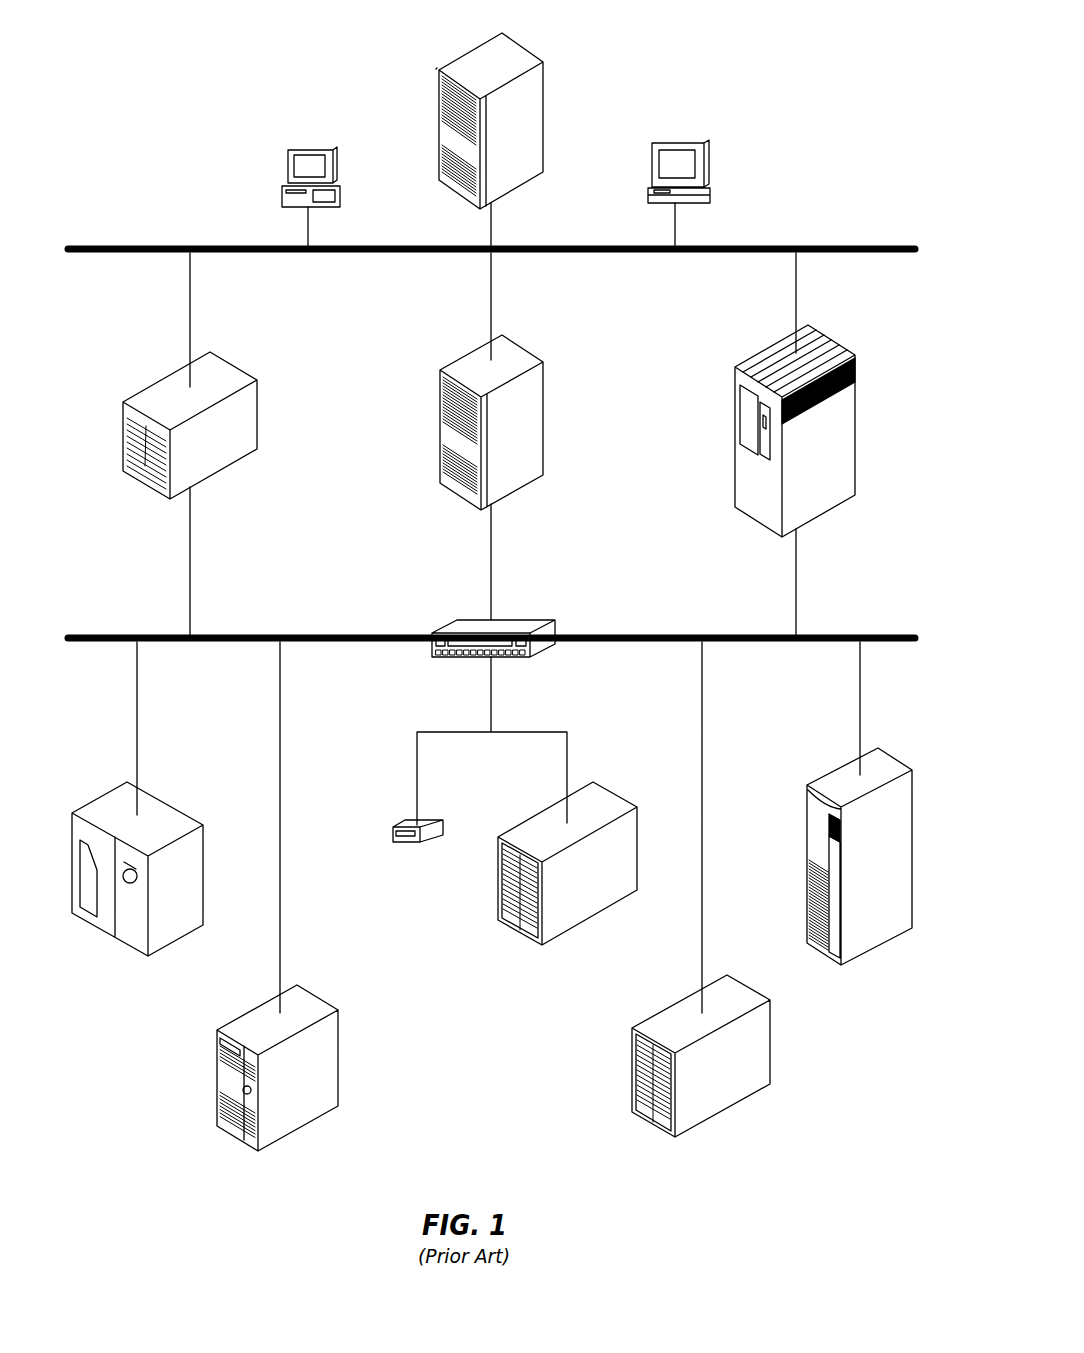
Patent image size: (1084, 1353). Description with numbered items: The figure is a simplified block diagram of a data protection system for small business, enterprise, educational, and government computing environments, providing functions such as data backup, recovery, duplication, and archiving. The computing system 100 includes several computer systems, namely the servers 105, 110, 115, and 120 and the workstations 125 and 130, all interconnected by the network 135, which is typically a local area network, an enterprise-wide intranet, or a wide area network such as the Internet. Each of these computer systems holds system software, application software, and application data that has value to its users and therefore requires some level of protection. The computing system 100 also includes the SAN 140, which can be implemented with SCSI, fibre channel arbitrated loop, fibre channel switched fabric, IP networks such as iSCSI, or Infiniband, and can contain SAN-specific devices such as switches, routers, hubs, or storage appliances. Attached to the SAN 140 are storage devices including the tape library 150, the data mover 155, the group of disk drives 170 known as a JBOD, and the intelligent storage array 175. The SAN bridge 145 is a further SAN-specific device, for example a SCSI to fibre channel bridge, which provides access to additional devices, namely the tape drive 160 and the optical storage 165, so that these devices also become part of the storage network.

The computing system 100 is at (700, 1206).
The server 105 is at (513, 50).
The server 110 is at (513, 350).
The server 115 is at (818, 348).
The server 120 is at (213, 375).
The workstation 125 is at (314, 150).
The workstation 130 is at (680, 143).
The network 135 is at (862, 247).
The SAN 140 is at (862, 635).
The SAN bridge 145 is at (530, 620).
The tape library 150 is at (160, 815).
The data mover 155 is at (308, 1000).
The tape drive 160 is at (393, 832).
The optical storage 165 is at (618, 800).
The group of disk drives 170 is at (728, 1000).
The intelligent storage array 175 is at (865, 760).